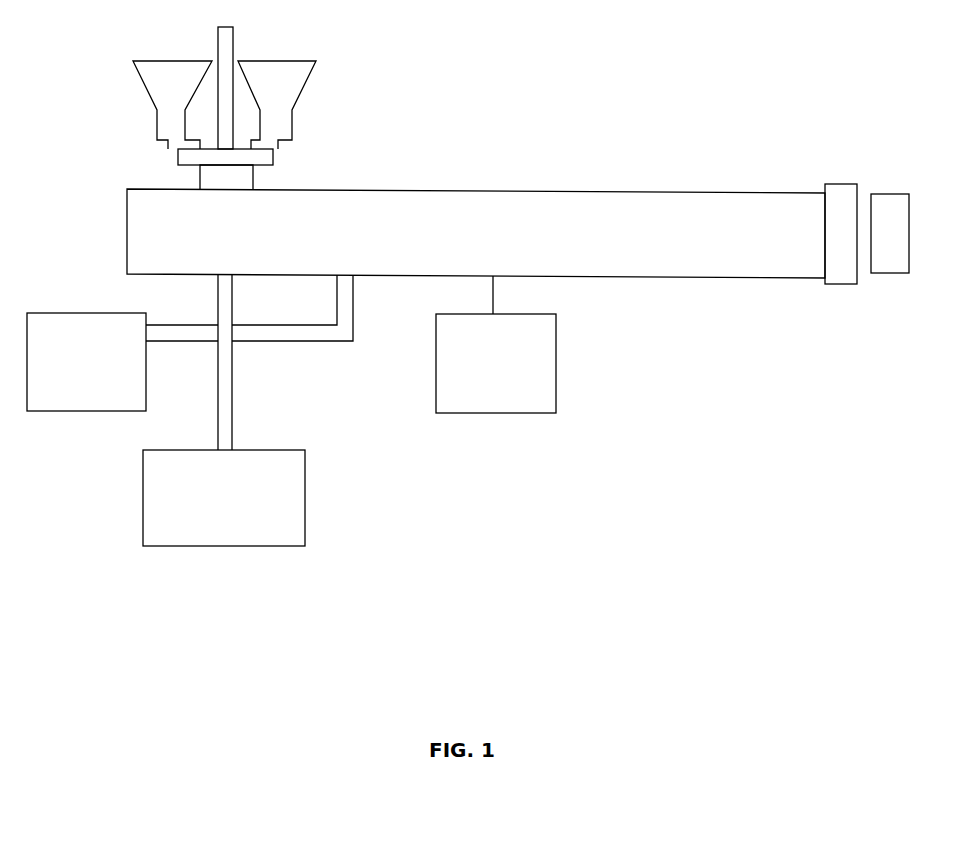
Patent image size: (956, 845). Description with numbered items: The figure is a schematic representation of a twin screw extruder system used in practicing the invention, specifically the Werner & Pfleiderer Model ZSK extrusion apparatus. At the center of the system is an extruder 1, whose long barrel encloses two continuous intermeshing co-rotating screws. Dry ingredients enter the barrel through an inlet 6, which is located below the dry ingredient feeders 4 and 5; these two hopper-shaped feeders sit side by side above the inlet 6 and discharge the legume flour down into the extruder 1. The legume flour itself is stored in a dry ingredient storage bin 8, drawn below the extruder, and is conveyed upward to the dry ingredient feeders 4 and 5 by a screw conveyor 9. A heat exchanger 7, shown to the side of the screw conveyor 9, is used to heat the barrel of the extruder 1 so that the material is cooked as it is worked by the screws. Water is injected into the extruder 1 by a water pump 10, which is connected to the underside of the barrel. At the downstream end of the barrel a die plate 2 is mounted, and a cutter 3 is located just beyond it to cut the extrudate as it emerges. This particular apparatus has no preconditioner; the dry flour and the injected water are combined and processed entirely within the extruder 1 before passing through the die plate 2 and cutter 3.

The extruder 1 is at (476, 233).
The die plate 2 is at (841, 234).
The cutter 3 is at (890, 233).
The dry ingredient feeder 4 is at (172, 105).
The dry ingredient feeder 5 is at (277, 105).
The inlet 6 is at (226, 177).
The heat exchanger 7 is at (86, 362).
The dry ingredient storage bin 8 is at (224, 498).
The screw conveyor 9 is at (249, 362).
The water pump 10 is at (496, 344).